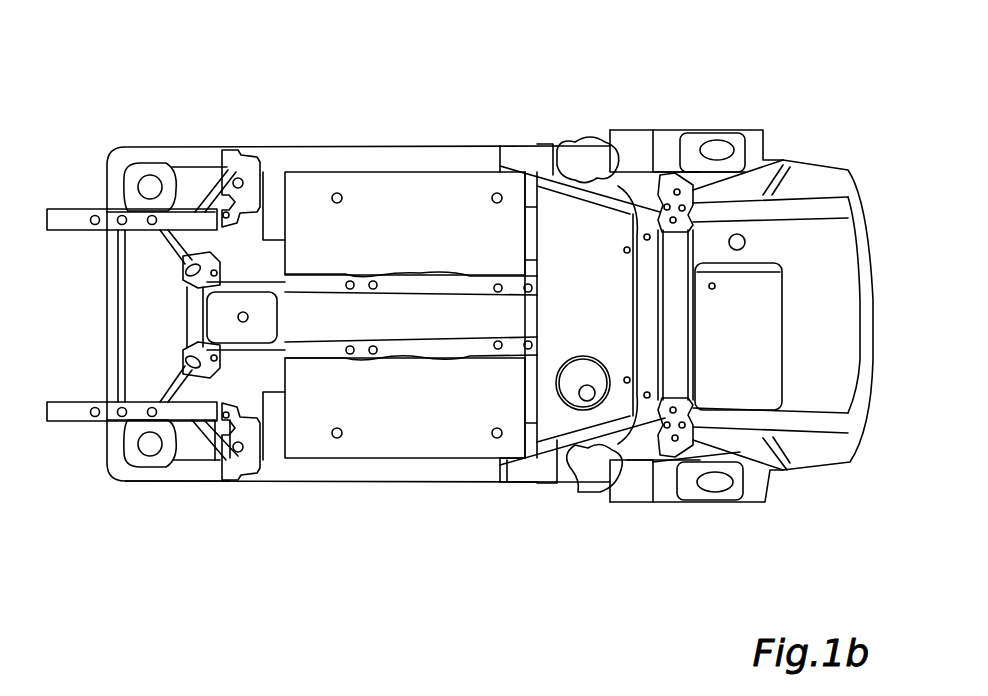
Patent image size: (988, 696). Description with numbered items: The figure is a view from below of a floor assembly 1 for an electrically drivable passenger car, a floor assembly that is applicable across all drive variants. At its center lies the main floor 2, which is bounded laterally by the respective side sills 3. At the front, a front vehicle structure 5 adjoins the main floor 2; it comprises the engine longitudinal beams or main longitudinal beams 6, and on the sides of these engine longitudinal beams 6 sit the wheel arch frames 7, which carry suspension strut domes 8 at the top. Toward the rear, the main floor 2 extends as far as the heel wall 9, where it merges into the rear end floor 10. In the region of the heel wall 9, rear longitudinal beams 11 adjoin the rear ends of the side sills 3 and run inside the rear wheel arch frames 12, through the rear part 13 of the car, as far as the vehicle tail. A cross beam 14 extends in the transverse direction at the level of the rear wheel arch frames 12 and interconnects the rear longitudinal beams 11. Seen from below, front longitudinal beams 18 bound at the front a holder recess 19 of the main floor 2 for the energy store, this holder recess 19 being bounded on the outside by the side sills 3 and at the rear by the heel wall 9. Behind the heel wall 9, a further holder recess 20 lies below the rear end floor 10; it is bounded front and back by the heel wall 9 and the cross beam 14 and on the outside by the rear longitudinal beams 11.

The floor assembly 1 is at (604, 96).
The main floor 2 is at (352, 107).
The side sills 3 is at (468, 150).
The front vehicle structure 5 is at (175, 140).
The engine longitudinal beams 6 is at (63, 218).
The wheel arch frames 7 is at (183, 470).
The suspension strut domes 8 is at (133, 463).
The heel wall 9 is at (528, 473).
The rear end floor 10 is at (603, 212).
The rear longitudinal beams 11 is at (550, 145).
The rear wheel arch frames 12 is at (768, 147).
The rear part 13 is at (860, 130).
The cross beam 14 is at (675, 298).
The front longitudinal beams 18 is at (280, 148).
The holder recess 19 is at (413, 423).
The holder recess 20 is at (610, 400).